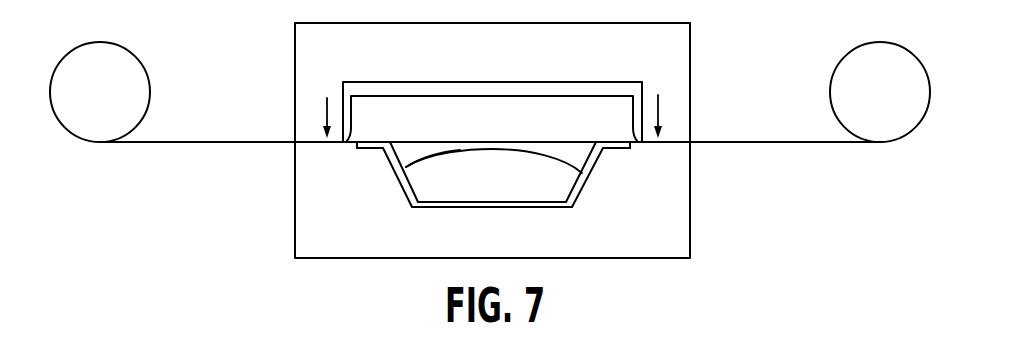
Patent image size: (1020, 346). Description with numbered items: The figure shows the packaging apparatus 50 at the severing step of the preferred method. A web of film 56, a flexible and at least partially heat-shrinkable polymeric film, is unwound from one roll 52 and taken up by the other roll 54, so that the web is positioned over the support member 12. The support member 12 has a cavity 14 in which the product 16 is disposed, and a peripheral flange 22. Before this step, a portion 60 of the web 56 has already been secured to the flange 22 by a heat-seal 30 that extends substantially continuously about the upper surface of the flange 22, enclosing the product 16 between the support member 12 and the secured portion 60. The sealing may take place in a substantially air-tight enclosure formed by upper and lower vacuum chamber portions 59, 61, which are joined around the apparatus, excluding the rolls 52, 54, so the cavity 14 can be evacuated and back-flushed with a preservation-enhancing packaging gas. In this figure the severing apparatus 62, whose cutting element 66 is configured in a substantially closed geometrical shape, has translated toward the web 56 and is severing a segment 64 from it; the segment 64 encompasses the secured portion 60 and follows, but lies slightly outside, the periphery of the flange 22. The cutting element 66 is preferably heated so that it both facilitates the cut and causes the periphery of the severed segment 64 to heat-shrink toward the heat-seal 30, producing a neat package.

The packaging apparatus 50 is at (756, 74).
The roll 52 is at (121, 104).
The roll 54 is at (901, 105).
The web of film 56 is at (270, 141).
The upper vacuum chamber portion 59 is at (295, 60).
The lower vacuum chamber portion 61 is at (295, 232).
The severing apparatus 62 is at (577, 72).
The cutting element 66 is at (415, 81).
The secured portion of web 60 is at (517, 141).
The support member 12 is at (583, 190).
The heat-seal 30 is at (613, 141).
The flange 22 is at (616, 150).
The product 16 is at (504, 192).
The cavity 14 is at (409, 158).
The severed web segment 64 is at (349, 158).